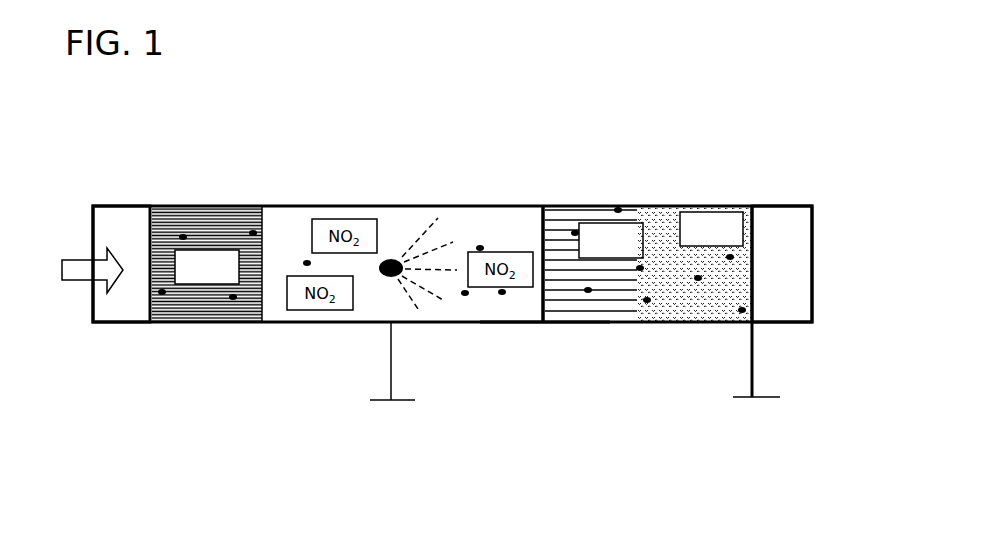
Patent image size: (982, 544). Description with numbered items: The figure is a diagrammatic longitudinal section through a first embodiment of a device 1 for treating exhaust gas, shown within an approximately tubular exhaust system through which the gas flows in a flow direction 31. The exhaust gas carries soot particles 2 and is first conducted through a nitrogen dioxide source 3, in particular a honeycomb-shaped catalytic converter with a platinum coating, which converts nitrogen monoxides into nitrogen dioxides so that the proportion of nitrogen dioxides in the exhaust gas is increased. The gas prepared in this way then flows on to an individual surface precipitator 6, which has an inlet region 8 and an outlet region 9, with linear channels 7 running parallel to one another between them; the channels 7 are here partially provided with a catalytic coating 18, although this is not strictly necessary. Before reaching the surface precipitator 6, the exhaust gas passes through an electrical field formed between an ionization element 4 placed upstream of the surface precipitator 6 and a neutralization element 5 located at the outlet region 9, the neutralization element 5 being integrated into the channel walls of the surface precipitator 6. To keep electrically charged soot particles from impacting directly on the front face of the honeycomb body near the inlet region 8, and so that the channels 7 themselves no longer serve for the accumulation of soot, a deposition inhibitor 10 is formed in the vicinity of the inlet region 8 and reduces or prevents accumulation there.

The device 1 is at (283, 412).
The soot particles 2 is at (132, 257).
The nitrogen dioxide source 3 is at (212, 197).
The ionization element 4 is at (391, 402).
The neutralization element 5 is at (752, 400).
The surface precipitator 6 is at (647, 268).
The channels 7 is at (610, 302).
The inlet region 8 is at (535, 218).
The outlet region 9 is at (760, 220).
The deposition inhibitor 10 is at (543, 327).
The catalytic coating 18 is at (707, 313).
The flow direction 31 is at (70, 278).